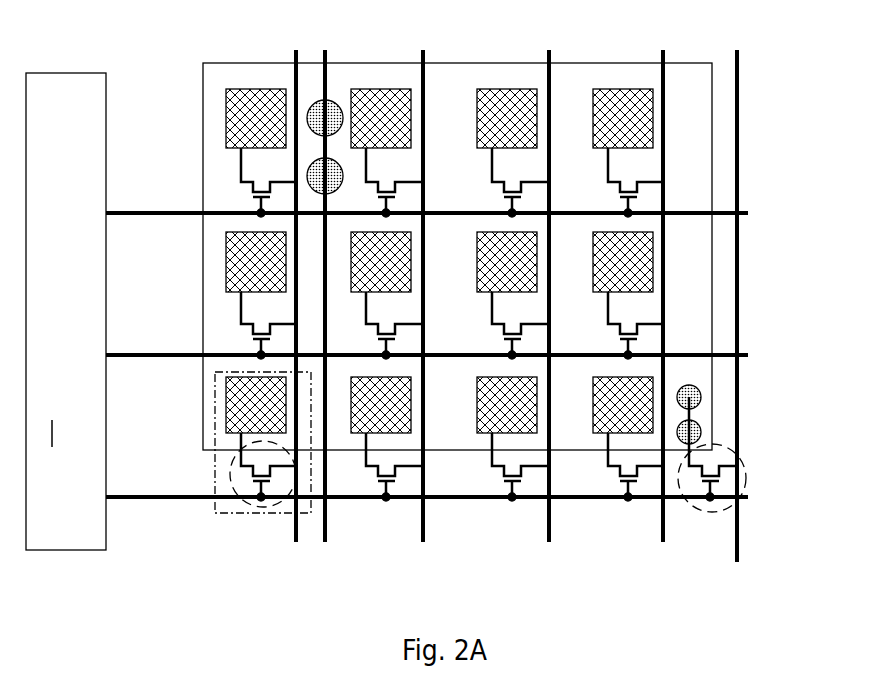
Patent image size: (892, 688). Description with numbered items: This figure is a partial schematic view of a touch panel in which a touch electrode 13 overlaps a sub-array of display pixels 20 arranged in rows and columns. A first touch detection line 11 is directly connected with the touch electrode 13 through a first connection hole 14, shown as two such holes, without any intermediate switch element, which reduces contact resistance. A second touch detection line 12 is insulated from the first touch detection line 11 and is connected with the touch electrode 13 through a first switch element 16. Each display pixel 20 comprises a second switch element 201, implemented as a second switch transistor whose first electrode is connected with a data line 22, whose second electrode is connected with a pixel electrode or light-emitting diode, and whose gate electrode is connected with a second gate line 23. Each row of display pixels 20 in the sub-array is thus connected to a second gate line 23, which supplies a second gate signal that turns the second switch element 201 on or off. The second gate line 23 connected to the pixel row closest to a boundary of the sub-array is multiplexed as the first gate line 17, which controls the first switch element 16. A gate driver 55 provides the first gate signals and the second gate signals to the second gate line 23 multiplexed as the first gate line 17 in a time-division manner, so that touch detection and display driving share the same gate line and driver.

The first touch detection line 11 is at (296, 517).
The second touch detection line 12 is at (738, 283).
The touch electrode 13 is at (692, 82).
The first connection hole 14 is at (322, 100).
The first switch element 16 is at (740, 470).
The first gate line 17 is at (655, 500).
The display pixel 20 is at (216, 463).
The second switch element 201 is at (247, 500).
The data line 22 is at (549, 515).
The second gate line 23 is at (693, 358).
The gate driver 55 is at (66, 311).